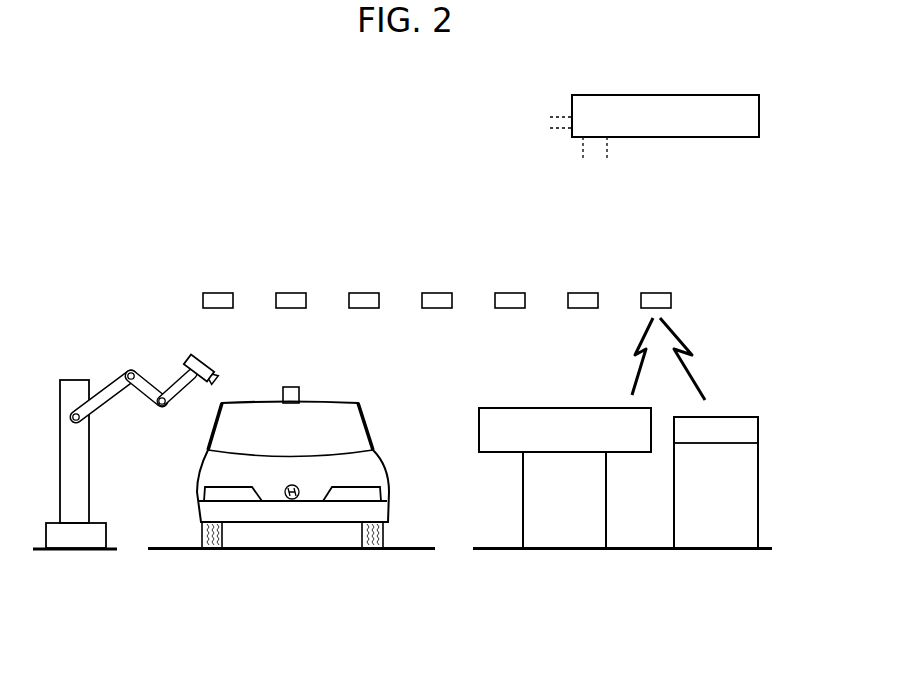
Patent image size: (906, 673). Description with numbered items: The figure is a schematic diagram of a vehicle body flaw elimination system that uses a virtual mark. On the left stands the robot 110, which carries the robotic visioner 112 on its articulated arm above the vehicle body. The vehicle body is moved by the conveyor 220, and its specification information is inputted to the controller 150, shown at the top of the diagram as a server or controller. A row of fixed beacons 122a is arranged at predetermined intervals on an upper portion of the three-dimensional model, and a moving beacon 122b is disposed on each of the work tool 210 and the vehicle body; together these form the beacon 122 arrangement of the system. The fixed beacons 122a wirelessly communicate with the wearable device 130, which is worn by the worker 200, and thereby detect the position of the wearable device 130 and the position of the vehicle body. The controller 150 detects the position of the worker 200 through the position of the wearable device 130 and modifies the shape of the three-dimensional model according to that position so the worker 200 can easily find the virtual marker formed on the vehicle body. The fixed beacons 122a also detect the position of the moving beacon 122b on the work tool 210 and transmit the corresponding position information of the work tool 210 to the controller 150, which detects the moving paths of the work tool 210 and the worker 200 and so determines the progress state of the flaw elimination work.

The robot 110 is at (84, 338).
The robotic visioner 112 is at (193, 355).
The beacon 122 is at (399, 447).
The fixed beacons 122a is at (655, 293).
The moving beacon 122b is at (292, 387).
The wearable device 130 is at (500, 408).
The controller 150 is at (611, 95).
The worker 200 is at (607, 474).
The work tool 210 is at (674, 528).
The conveyor 220 is at (288, 548).